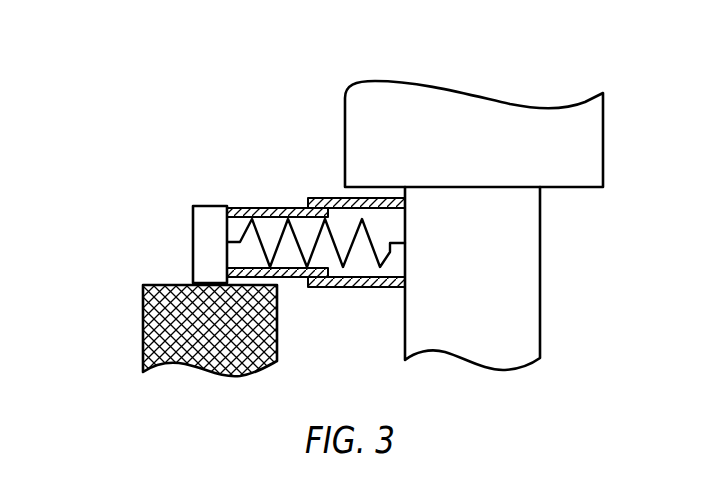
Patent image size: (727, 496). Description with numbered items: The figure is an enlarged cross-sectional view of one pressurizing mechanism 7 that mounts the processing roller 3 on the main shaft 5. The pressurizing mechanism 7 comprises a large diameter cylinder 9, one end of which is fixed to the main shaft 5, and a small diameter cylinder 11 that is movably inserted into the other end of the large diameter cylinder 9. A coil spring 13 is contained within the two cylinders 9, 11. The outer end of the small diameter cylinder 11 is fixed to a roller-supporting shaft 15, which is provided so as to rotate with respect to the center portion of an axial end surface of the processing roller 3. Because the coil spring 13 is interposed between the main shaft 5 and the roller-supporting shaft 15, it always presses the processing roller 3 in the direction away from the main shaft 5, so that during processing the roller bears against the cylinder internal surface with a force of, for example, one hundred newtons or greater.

The processing roller 3 is at (143, 337).
The main shaft 5 is at (525, 285).
The pressurizing mechanism 7 is at (316, 225).
The large diameter cylinder 9 is at (377, 288).
The small diameter cylinder 11 is at (293, 283).
The coil spring 13 is at (333, 288).
The roller-supporting shaft 15 is at (193, 241).